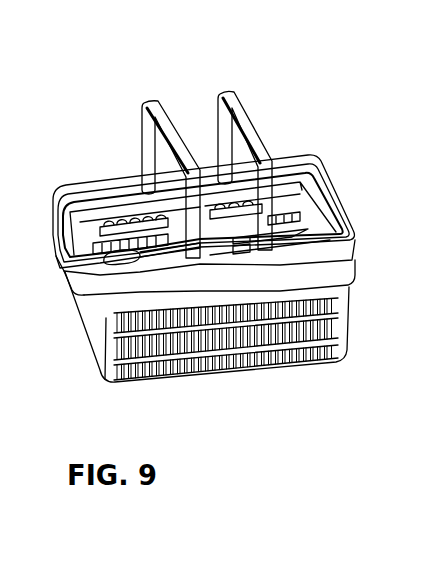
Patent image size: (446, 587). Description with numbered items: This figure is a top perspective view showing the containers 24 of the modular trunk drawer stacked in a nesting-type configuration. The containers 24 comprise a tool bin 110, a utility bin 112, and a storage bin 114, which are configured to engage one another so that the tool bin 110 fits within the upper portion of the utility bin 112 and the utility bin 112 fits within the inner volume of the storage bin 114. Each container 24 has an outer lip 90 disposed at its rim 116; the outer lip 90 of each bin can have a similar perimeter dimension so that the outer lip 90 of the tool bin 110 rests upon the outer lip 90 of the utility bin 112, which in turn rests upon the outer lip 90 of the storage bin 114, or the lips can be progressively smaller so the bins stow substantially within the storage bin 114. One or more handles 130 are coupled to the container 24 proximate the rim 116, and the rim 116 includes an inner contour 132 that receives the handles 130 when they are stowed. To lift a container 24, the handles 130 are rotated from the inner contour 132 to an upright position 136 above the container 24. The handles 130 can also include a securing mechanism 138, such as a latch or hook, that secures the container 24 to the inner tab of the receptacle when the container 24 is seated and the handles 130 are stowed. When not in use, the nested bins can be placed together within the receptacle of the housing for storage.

The container 24 is at (316, 134).
The outer lip 90 is at (352, 288).
The tool bin 110 is at (343, 252).
The utility bin 112 is at (342, 272).
The storage bin 114 is at (342, 338).
The rim 116 is at (326, 178).
The handle 130 is at (184, 145).
The inner contour 132 is at (108, 188).
The upright position 136 is at (131, 129).
The securing mechanism 138 is at (238, 177).